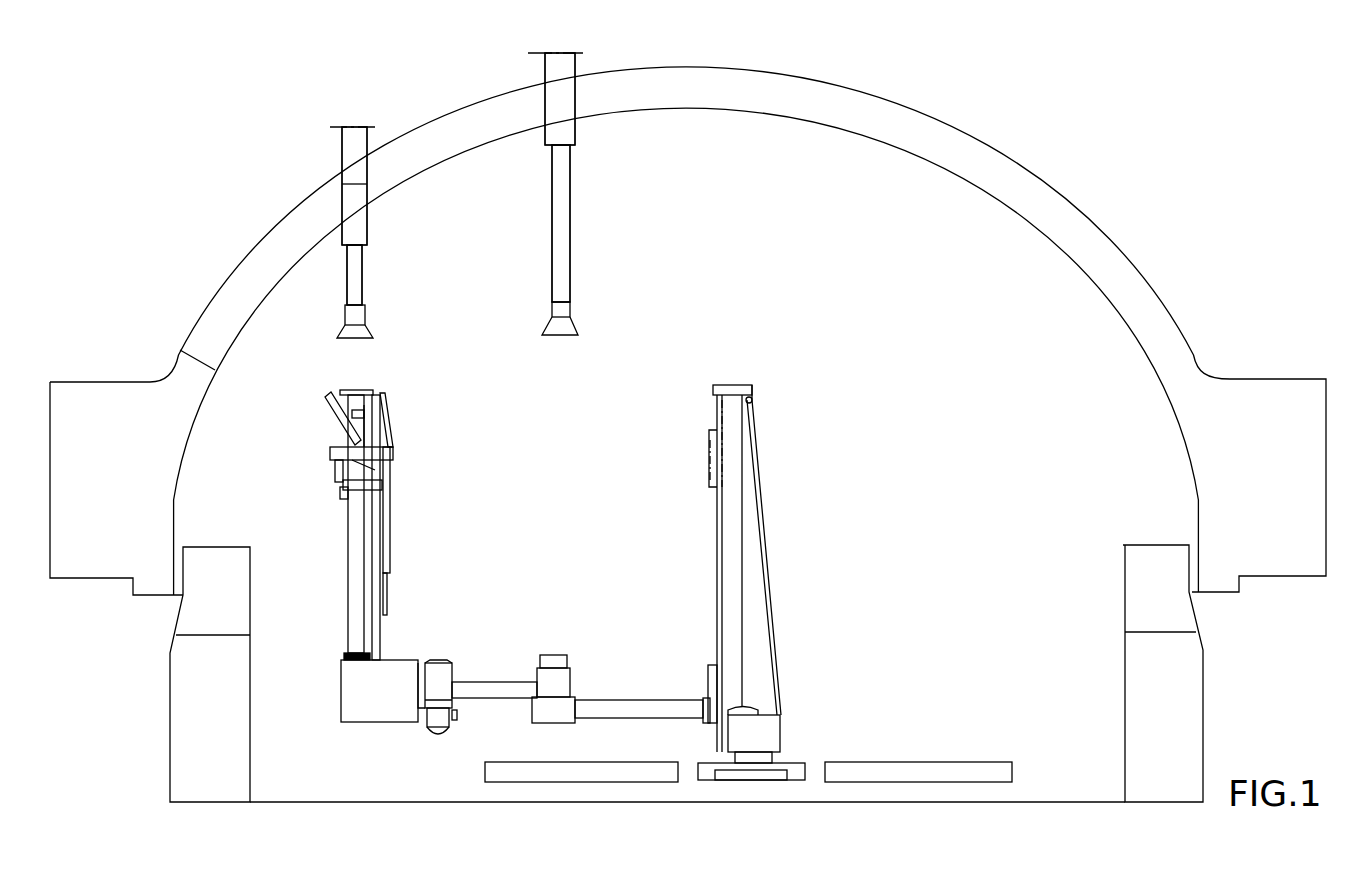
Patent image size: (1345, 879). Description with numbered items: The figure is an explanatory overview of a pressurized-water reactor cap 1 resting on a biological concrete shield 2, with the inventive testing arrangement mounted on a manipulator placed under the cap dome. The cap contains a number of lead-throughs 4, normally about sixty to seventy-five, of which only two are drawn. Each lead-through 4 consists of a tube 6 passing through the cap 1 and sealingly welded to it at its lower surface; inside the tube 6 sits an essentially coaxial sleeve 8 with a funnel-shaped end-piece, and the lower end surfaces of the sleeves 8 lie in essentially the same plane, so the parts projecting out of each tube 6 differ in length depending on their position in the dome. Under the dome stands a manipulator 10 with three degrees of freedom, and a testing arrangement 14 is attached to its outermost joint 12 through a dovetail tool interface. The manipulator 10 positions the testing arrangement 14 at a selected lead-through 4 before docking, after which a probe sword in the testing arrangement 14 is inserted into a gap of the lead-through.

The pressurized-water reactor cap 1 is at (1017, 167).
The biological concrete shield 2 is at (1190, 742).
The lead-through 4 is at (326, 158).
The tube 6 is at (367, 141).
The sleeve 8 is at (362, 288).
The manipulator 10 is at (723, 568).
The outermost joint 12 is at (440, 686).
The testing arrangement 14 is at (412, 504).